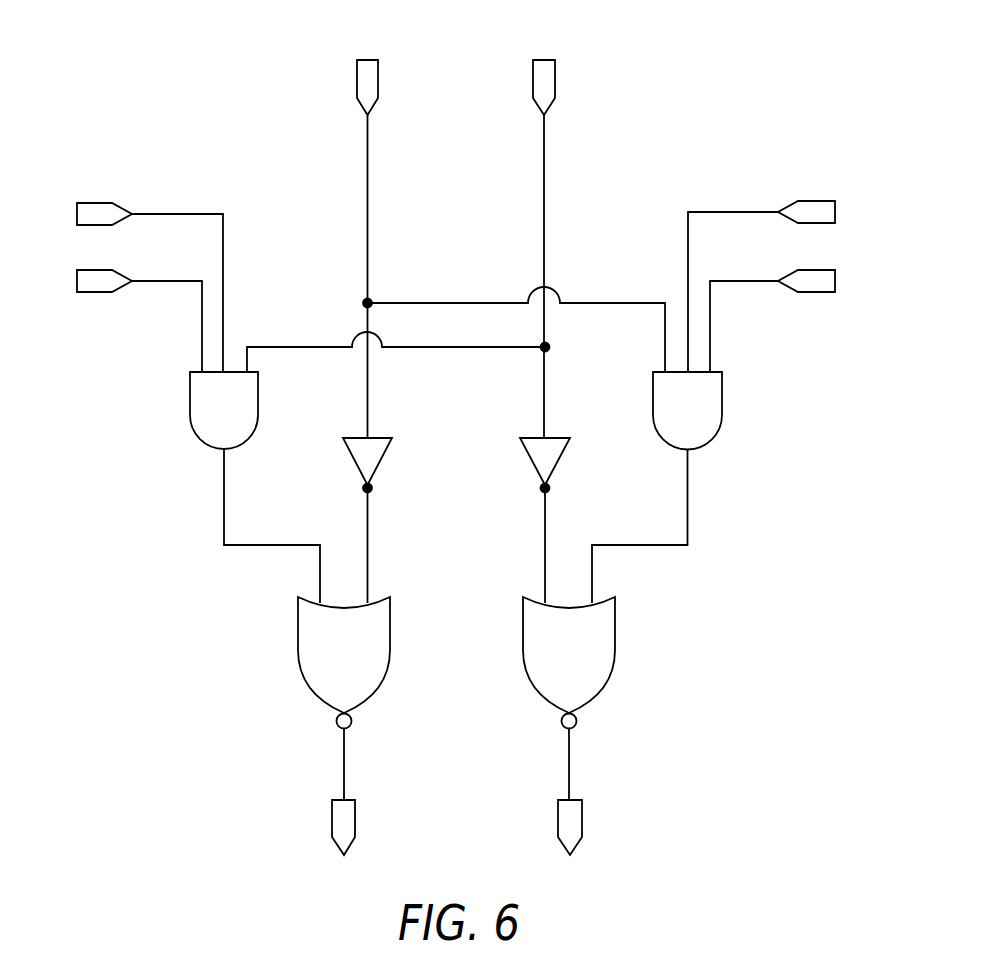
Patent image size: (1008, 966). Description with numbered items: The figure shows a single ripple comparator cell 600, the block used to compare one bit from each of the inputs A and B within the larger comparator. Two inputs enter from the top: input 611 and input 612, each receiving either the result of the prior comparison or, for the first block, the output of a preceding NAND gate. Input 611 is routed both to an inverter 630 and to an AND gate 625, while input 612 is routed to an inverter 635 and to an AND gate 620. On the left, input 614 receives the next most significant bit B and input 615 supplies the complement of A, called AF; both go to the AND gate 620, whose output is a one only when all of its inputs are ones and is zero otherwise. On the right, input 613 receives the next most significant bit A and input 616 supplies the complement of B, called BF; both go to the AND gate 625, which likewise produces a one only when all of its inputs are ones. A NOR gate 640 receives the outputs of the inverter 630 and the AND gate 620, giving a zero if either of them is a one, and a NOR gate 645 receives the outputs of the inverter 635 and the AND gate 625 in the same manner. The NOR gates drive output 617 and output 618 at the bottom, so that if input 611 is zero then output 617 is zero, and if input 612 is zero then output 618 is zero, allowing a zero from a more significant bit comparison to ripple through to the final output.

The ripple comparator cell 600 is at (776, 62).
The input 611 is at (369, 163).
The input 612 is at (546, 163).
The input 613 is at (733, 209).
The input 614 is at (178, 211).
The input 615 is at (168, 279).
The input 616 is at (744, 278).
The output 617 is at (346, 765).
The output 618 is at (572, 765).
The AND gate 620 is at (259, 392).
The AND gate 625 is at (723, 392).
The inverter 630 is at (378, 463).
The inverter 635 is at (556, 463).
The NOR gate 640 is at (391, 636).
The NOR gate 645 is at (616, 637).